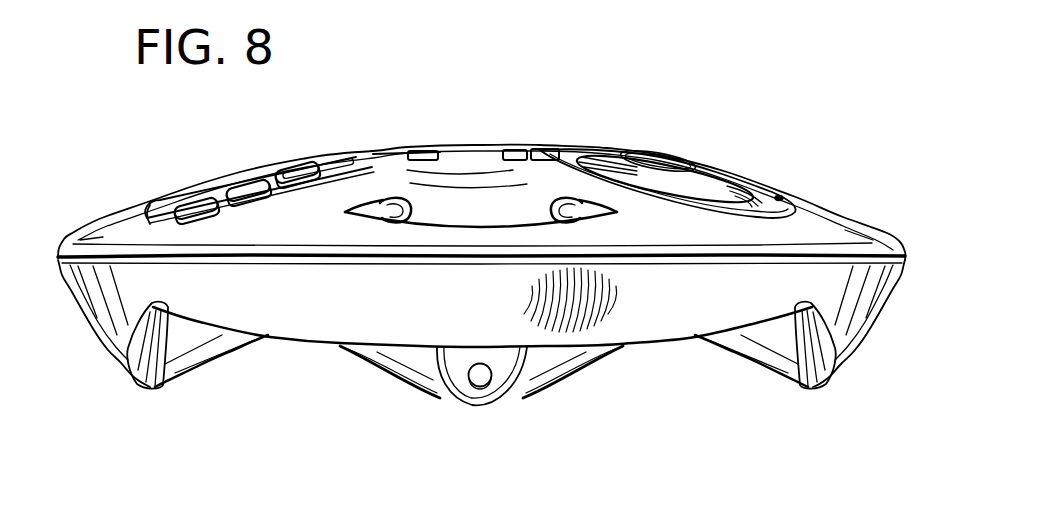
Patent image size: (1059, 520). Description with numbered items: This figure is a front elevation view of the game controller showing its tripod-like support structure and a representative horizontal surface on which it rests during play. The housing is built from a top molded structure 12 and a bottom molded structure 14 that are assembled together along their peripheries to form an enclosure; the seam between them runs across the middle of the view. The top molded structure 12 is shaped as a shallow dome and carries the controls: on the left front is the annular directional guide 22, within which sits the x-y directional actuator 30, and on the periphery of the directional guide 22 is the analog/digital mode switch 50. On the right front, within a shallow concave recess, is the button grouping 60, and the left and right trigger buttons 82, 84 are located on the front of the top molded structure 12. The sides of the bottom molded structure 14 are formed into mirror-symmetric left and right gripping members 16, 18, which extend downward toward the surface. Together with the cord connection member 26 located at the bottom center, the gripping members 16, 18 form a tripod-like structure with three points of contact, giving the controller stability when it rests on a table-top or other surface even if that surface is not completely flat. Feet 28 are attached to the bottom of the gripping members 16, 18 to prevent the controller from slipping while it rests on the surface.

The top molded structure 12 is at (128, 227).
The bottom molded structure 14 is at (310, 322).
The left gripping member 16 is at (860, 347).
The right gripping member 18 is at (97, 340).
The annular directional guide 22 is at (775, 185).
The cord connection member 26 is at (488, 393).
The feet 28 is at (206, 372).
The x-y directional actuator 30 is at (681, 155).
The analog/digital mode switch 50 is at (517, 151).
The button grouping 60 is at (243, 180).
The left trigger button 82 is at (577, 207).
The right trigger button 84 is at (383, 207).